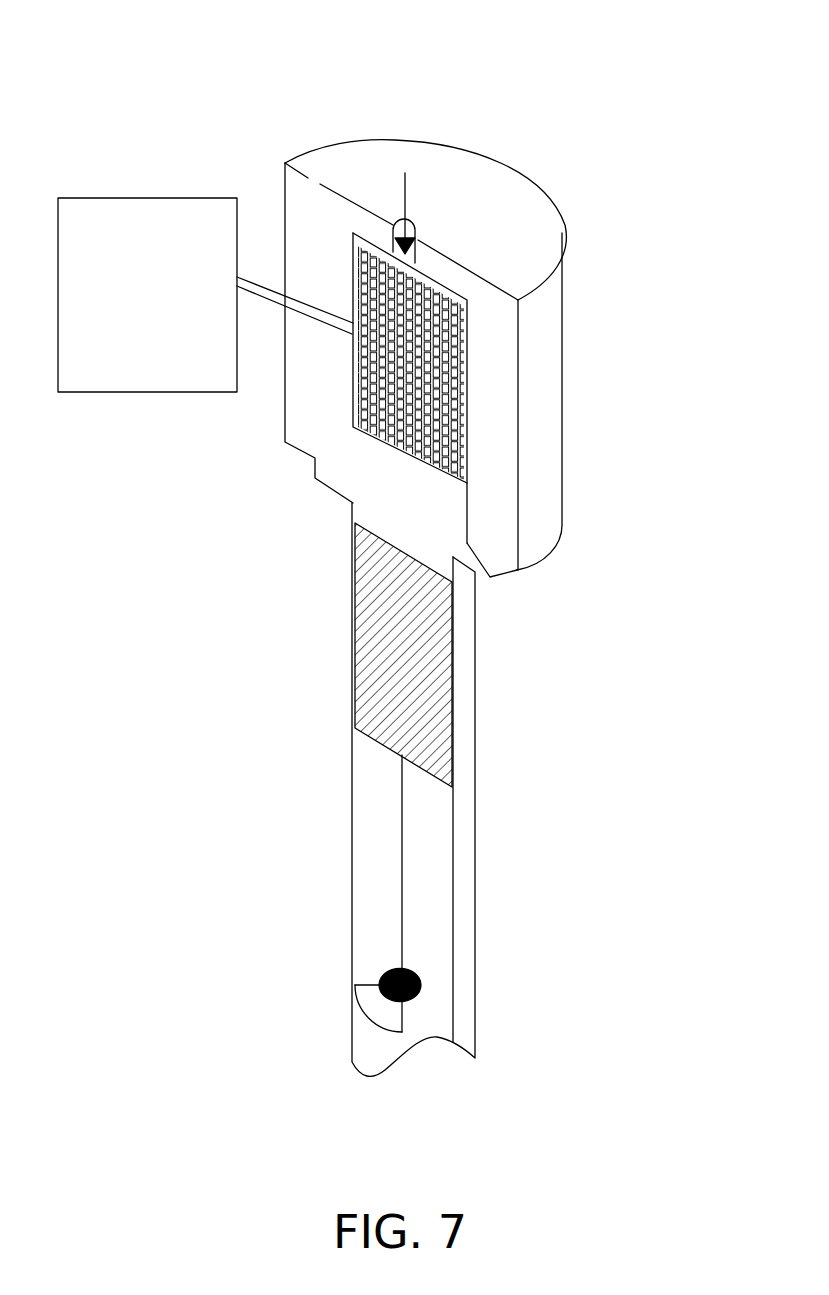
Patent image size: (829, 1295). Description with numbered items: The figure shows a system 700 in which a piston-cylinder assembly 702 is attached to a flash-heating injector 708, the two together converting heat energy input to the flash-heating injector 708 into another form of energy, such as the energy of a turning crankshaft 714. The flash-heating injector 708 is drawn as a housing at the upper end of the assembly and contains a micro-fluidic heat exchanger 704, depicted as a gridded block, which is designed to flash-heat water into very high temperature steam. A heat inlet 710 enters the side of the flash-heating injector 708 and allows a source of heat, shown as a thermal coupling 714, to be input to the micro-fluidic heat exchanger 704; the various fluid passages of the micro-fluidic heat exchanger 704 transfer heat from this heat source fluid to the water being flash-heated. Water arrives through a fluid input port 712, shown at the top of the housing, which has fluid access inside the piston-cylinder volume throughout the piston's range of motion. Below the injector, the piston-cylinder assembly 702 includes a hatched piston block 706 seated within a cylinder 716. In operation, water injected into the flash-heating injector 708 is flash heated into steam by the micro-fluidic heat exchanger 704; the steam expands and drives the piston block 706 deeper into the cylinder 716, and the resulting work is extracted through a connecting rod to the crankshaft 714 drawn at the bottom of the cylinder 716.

The system 700 is at (166, 74).
The piston-cylinder assembly 702 is at (509, 789).
The micro-fluidic heat exchanger 704 is at (445, 425).
The piston block 706 is at (450, 755).
The flash-heating injector 708 is at (567, 365).
The heat inlet 710 is at (267, 295).
The fluid input port 712 is at (405, 175).
The thermal coupling / crankshaft 714 is at (167, 336).
The cylinder 716 is at (436, 868).